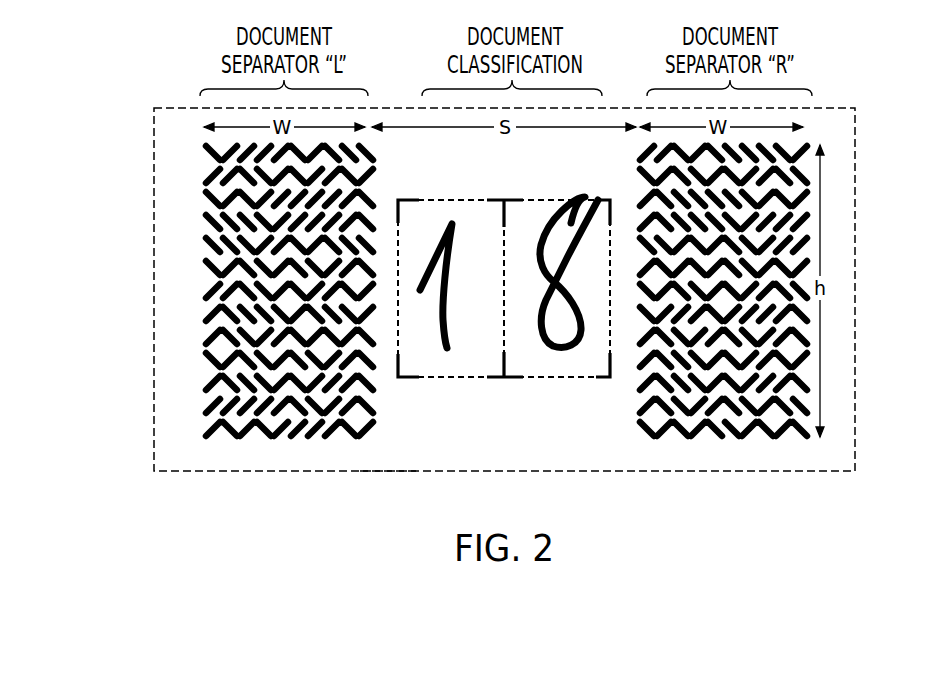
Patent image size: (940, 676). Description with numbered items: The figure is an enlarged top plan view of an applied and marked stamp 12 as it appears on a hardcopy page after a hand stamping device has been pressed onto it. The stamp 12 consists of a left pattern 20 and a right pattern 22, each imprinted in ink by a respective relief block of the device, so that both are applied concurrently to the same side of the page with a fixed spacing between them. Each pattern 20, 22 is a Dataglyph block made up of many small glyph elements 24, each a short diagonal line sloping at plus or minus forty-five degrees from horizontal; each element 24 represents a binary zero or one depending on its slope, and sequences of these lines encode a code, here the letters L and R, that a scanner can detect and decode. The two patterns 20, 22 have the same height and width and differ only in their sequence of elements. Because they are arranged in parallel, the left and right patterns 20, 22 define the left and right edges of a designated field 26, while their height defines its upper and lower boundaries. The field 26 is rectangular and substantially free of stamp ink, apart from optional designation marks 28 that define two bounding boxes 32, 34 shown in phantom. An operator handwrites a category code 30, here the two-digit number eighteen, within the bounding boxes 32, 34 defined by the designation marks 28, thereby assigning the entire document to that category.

The stamp 12 is at (163, 343).
The left pattern 20 is at (212, 235).
The right pattern 22 is at (790, 259).
The glyph element 24 is at (211, 407).
The designated field 26 is at (392, 461).
The designation marks 28 is at (612, 349).
The category code 30 is at (447, 350).
The bounding box 32 is at (455, 197).
The bounding box 34 is at (556, 197).